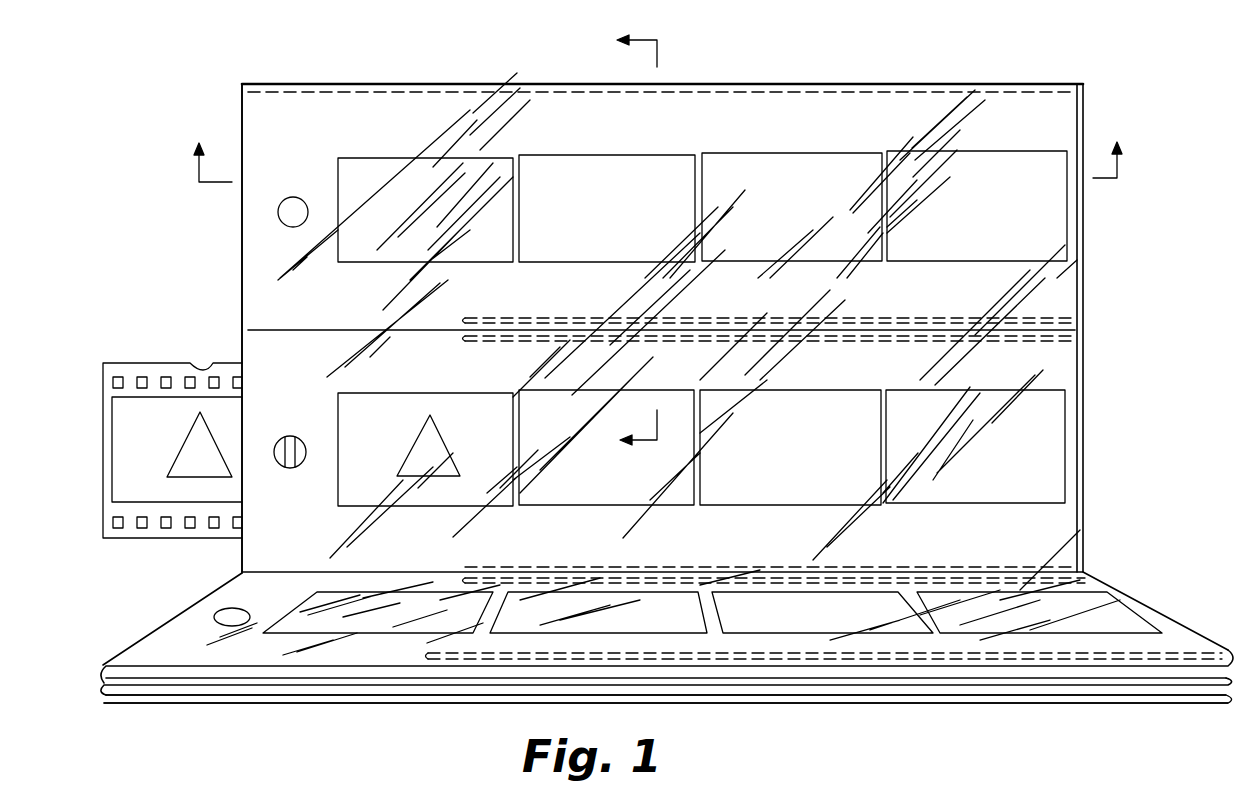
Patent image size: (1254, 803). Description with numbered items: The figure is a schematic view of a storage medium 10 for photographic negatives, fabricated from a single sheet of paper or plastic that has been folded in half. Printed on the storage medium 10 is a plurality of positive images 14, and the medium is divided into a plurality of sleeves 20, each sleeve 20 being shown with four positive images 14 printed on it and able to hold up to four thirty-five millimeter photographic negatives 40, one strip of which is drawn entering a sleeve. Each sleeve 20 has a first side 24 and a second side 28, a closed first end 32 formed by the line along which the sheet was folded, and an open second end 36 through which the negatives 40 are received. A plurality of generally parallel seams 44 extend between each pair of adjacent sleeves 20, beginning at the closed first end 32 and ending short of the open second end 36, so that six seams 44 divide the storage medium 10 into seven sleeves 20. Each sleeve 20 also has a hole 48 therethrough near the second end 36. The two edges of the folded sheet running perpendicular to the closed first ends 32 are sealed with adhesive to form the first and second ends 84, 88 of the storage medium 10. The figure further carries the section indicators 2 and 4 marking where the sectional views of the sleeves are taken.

The storage medium 10 is at (240, 97).
The positive images 14 is at (553, 173).
The sleeves 20 is at (1070, 245).
The first side 24 is at (812, 84).
The second side 28 is at (985, 318).
The closed first end 32 is at (1088, 108).
The open second end 36 is at (240, 262).
The photographic negatives 40 is at (133, 420).
The seams 44 is at (1085, 320).
The hole 48 is at (278, 213).
The first end of the storage medium 84 is at (1032, 84).
The second end of the storage medium 88 is at (1125, 700).
The section line 2- 2 is at (657, 163).
The section line 4- 4 is at (621, 248).